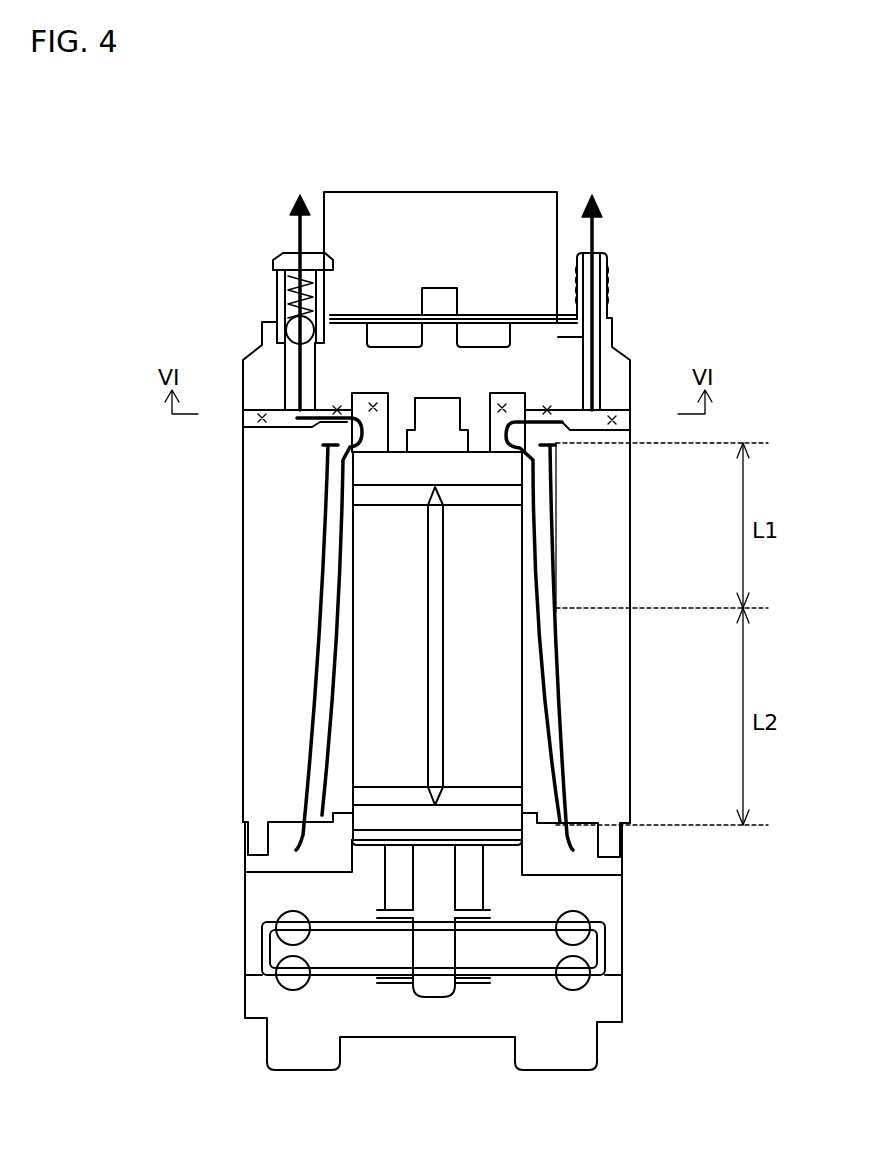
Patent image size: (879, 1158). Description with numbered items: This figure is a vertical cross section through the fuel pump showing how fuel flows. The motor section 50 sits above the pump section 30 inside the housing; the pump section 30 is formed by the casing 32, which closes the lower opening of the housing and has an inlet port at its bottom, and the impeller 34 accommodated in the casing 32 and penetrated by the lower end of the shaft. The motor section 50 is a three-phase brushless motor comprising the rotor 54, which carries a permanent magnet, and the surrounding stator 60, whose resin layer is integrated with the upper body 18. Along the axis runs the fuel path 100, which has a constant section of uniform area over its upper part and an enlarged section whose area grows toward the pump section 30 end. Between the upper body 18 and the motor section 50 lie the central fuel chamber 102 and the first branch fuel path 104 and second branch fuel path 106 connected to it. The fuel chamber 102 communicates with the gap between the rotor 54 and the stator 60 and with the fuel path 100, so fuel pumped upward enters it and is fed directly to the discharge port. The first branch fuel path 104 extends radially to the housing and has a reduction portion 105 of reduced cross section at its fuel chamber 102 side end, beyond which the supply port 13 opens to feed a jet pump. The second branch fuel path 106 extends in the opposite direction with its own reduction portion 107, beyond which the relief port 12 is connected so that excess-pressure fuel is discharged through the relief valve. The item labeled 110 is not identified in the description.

The relief port 12 is at (274, 293).
The supply port 13 is at (607, 282).
The upper body 18 is at (560, 337).
The pump section 30 is at (492, 921).
The casing 32 is at (597, 890).
The impeller 34 is at (466, 950).
The motor section 50 is at (230, 522).
The rotor 54 is at (485, 518).
The stator 60 is at (600, 552).
The fuel path 100 is at (320, 700).
The fuel chamber 102 is at (502, 405).
The first branch fuel path 104 is at (612, 418).
The reduction portion 105 is at (547, 405).
The second branch fuel path 106 is at (262, 416).
The reduction portion 107 is at (337, 405).
The leg portion 110 is at (323, 623).